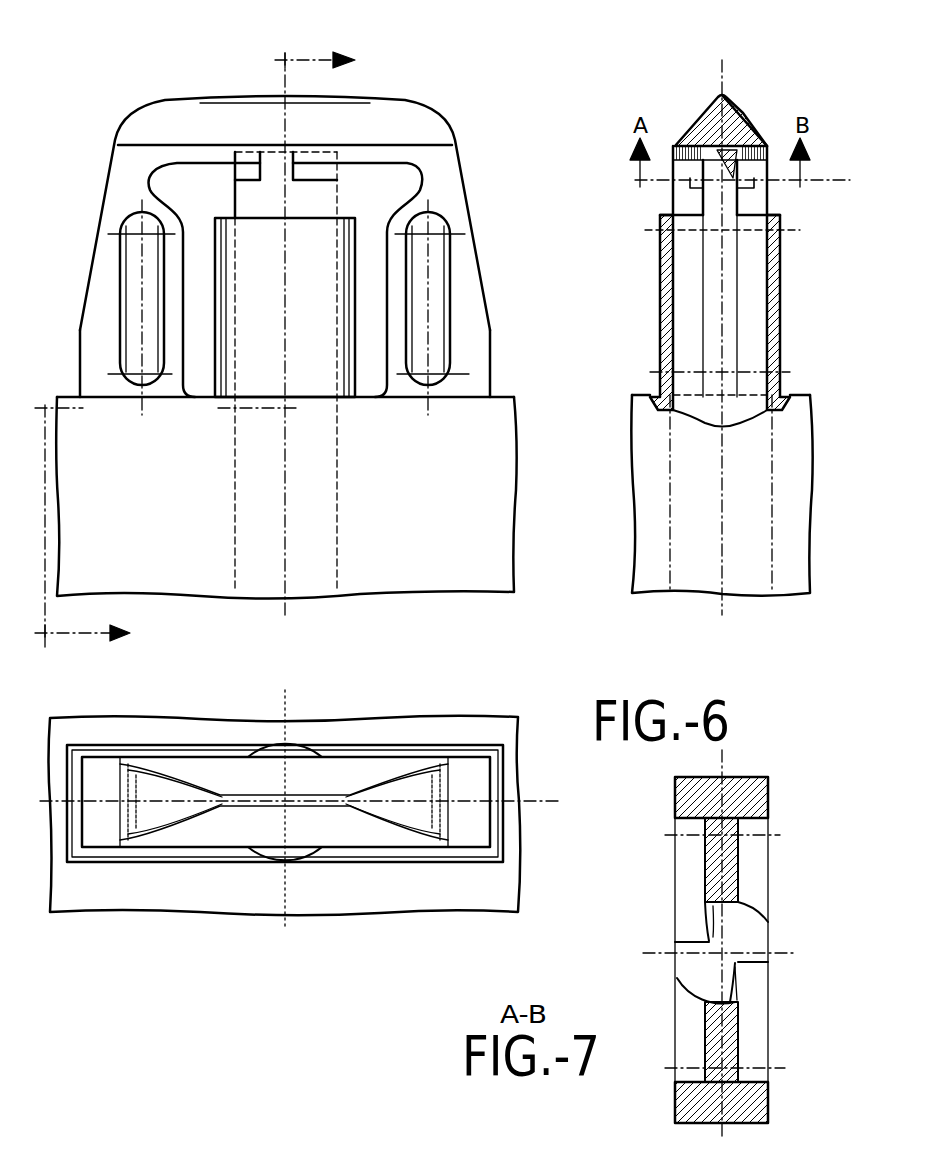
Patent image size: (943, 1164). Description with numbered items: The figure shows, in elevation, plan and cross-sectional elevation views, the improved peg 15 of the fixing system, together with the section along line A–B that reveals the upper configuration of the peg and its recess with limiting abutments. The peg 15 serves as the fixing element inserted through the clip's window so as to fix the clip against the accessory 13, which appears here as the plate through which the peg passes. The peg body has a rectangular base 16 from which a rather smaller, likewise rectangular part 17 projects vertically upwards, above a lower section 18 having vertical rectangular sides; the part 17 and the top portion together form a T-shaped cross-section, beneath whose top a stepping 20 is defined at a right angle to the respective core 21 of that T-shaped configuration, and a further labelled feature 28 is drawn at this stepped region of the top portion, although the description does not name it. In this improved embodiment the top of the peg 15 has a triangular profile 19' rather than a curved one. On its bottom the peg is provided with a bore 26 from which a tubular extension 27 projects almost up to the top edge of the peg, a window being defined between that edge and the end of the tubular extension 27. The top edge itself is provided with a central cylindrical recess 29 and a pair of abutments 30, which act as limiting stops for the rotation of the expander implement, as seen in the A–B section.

In FIG. 6, the accessory 13 is at (130, 505).
In FIG. 6, the peg 15 is at (222, 60).
In FIG. 7, the peg 15 is at (791, 770).
In FIG. 6, the rectangular base 16 is at (115, 400).
In FIG. 6, the part 17 is at (103, 272).
In FIG. 7, the part 17 is at (730, 847).
In FIG. 6, the lower section 18 is at (80, 350).
In FIG. 6, the triangular profile top 19' is at (468, 429).
In FIG. 6, the stepping 20 is at (692, 163).
In FIG. 6, the core 21 is at (712, 178).
In FIG. 6, the bore 26 is at (316, 399).
In FIG. 6, the tubular extension 27 is at (353, 281).
In FIG. 6, the slot 28 is at (320, 195).
In FIG. 7, the central cylindrical recess 29 is at (743, 928).
In FIG. 6, the abutments 30 is at (748, 110).
In FIG. 7, the abutments 30 is at (710, 922).